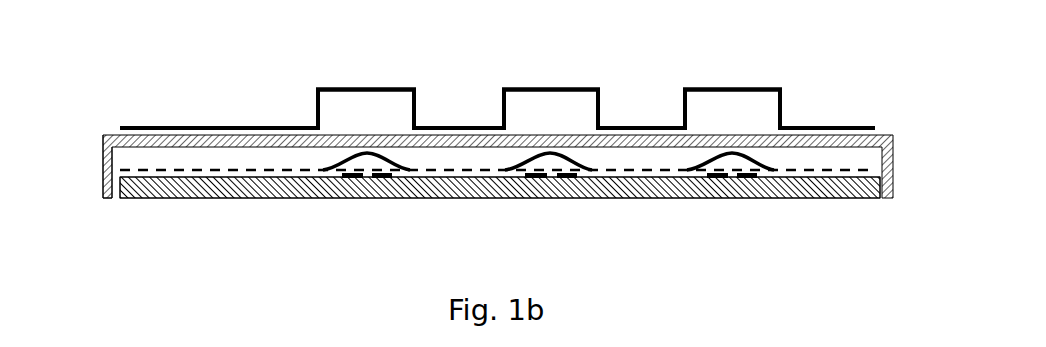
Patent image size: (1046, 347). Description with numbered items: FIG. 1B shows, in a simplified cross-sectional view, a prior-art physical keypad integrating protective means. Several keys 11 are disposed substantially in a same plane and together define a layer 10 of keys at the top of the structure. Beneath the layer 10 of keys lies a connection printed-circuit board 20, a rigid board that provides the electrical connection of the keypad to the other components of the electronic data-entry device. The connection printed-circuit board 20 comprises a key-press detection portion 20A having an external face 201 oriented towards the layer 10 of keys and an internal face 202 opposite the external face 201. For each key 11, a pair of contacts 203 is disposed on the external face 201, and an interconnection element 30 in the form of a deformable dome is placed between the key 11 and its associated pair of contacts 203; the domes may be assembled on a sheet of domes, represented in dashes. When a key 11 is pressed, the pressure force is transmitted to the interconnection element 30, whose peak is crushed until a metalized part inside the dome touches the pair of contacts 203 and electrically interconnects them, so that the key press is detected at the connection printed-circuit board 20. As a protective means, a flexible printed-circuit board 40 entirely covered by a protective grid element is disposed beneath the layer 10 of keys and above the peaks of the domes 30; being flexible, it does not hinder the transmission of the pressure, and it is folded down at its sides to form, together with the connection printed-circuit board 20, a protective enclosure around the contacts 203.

The layer of keys 10 is at (173, 125).
The key 11 is at (395, 88).
The connection printed-circuit board 20 is at (148, 199).
The key-press detection portion 20A is at (452, 199).
The interconnection element 30 is at (355, 135).
The flexible printed-circuit board 40 is at (97, 157).
The external face 201 is at (893, 175).
The internal face 202 is at (878, 199).
The pair of contacts 203 is at (373, 199).